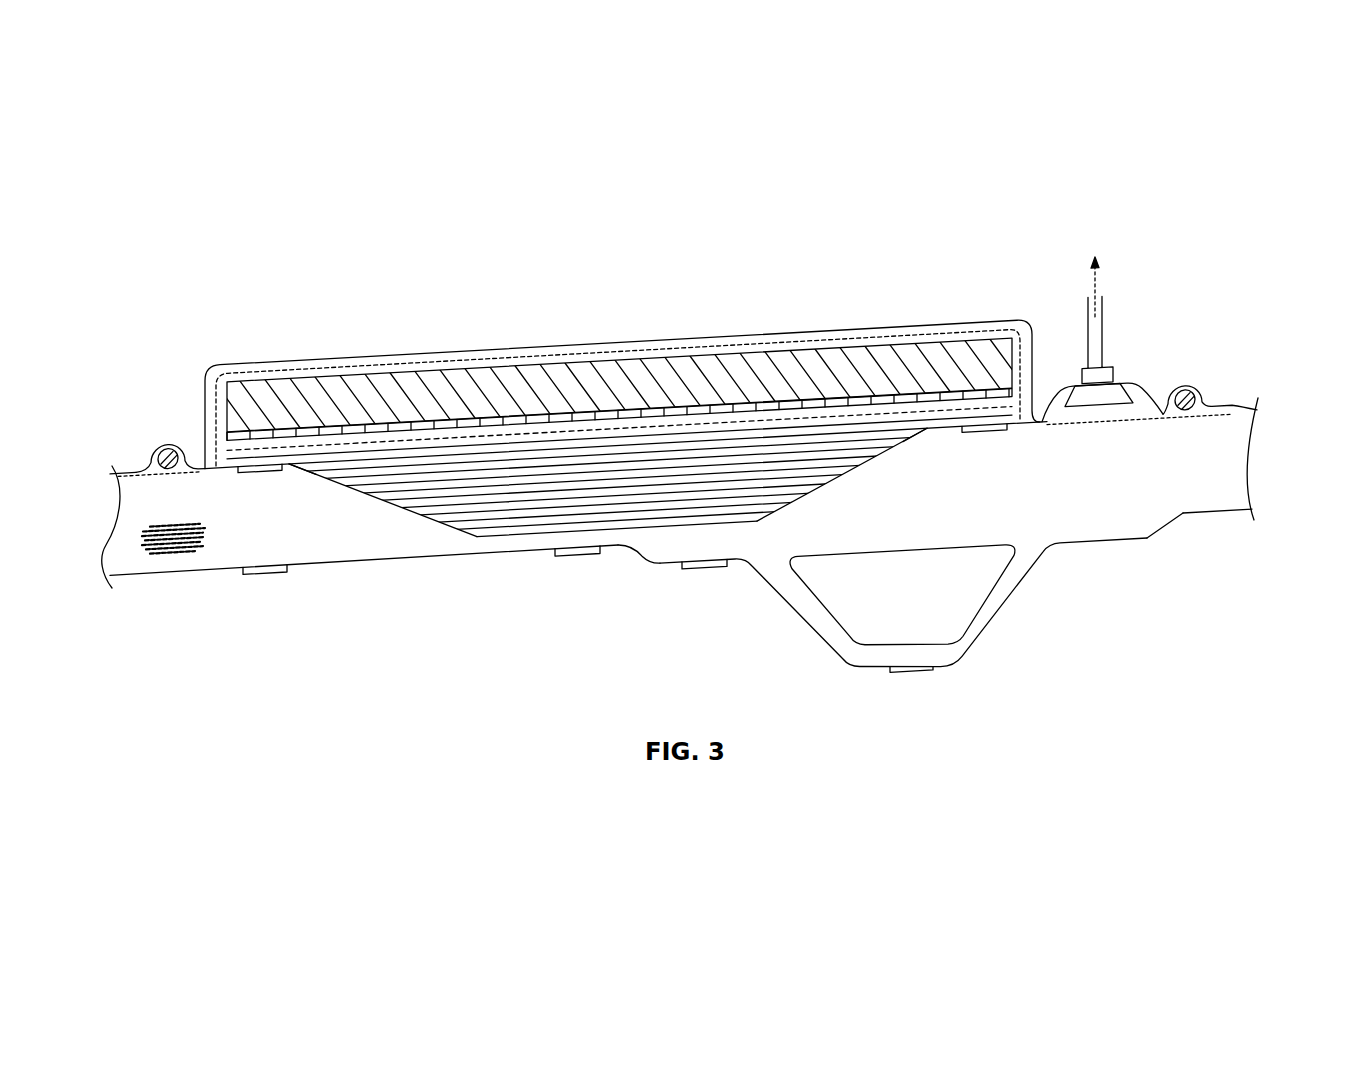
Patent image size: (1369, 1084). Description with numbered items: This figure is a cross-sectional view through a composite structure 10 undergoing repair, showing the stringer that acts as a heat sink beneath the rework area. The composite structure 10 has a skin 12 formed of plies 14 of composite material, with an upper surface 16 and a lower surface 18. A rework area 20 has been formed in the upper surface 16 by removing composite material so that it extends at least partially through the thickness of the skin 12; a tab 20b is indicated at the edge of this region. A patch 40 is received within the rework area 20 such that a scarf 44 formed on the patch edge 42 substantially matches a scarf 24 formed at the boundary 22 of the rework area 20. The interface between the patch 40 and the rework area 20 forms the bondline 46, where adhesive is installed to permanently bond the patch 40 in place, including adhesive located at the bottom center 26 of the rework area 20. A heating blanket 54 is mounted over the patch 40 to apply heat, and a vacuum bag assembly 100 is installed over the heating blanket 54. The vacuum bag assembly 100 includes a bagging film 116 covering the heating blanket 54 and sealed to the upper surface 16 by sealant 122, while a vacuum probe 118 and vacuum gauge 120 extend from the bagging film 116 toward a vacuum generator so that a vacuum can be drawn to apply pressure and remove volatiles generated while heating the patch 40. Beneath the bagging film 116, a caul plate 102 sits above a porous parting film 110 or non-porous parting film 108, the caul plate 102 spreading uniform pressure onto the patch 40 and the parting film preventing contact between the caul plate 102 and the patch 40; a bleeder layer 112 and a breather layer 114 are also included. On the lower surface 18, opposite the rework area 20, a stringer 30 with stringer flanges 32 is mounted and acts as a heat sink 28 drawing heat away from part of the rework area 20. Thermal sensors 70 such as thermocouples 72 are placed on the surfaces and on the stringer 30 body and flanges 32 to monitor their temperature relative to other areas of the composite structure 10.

The composite structure 10 is at (92, 500).
The skin 12 is at (1258, 430).
The plies 14 is at (187, 535).
The upper surface 16 is at (123, 468).
The lower surface 18 is at (1232, 513).
The rework area 20 is at (619, 443).
The stack tab 20b is at (295, 469).
The boundary 22 is at (383, 501).
The scarf 24 is at (430, 521).
The bottom center 26 is at (570, 533).
The heat sink 28 is at (895, 597).
The stringer 30 is at (822, 644).
The stringer flanges 32 is at (627, 550).
The patch 40 is at (489, 514).
The patch edge 42 is at (608, 370).
The scarf 44 is at (360, 466).
The bondline 46 is at (357, 488).
The heating blanket 54 is at (688, 378).
The thermal sensors 70 is at (605, 617).
The thermocouples 72 is at (262, 578).
The vacuum bag assembly 100 is at (615, 358).
The caul plate 102 is at (482, 432).
The non-porous parting film 108 is at (619, 349).
The porous parting film 110 is at (598, 442).
The bleeder layer 112 is at (484, 445).
The breather layer 114 is at (618, 367).
The bagging film 116 is at (270, 365).
The vacuum probe 118 is at (1130, 331).
The vacuum gauge 120 is at (1115, 374).
The sealant 122 is at (168, 447).